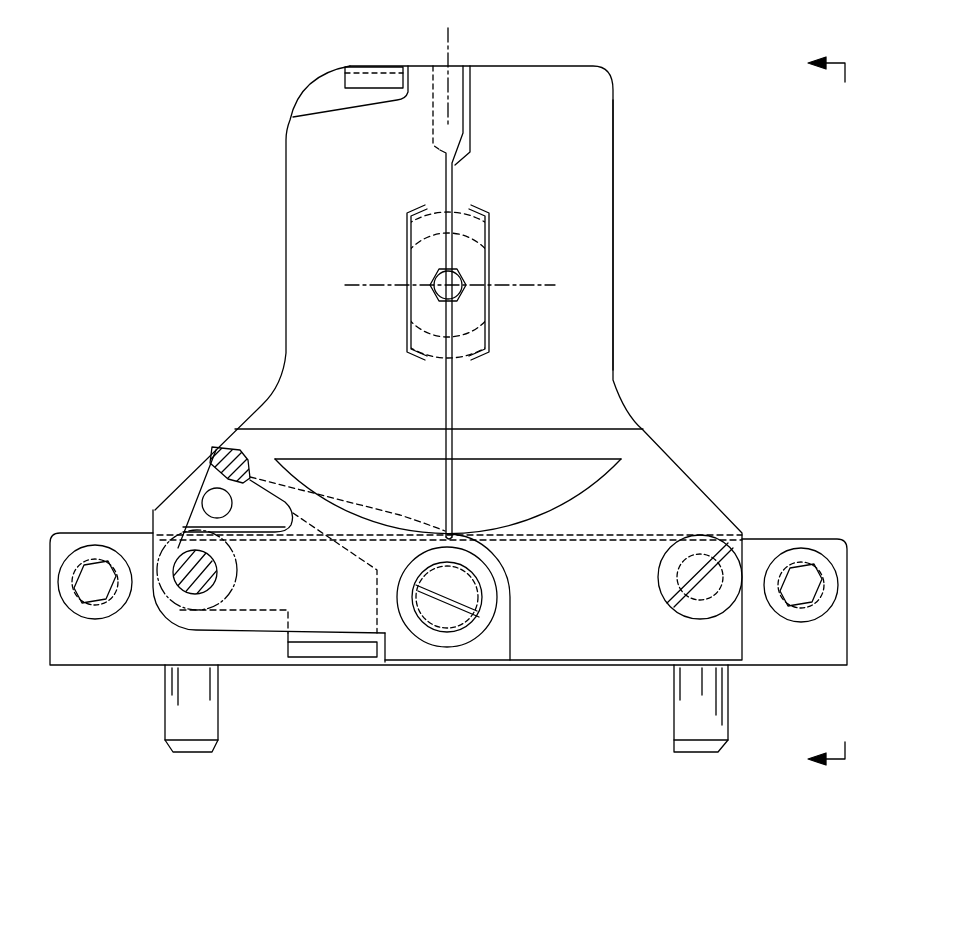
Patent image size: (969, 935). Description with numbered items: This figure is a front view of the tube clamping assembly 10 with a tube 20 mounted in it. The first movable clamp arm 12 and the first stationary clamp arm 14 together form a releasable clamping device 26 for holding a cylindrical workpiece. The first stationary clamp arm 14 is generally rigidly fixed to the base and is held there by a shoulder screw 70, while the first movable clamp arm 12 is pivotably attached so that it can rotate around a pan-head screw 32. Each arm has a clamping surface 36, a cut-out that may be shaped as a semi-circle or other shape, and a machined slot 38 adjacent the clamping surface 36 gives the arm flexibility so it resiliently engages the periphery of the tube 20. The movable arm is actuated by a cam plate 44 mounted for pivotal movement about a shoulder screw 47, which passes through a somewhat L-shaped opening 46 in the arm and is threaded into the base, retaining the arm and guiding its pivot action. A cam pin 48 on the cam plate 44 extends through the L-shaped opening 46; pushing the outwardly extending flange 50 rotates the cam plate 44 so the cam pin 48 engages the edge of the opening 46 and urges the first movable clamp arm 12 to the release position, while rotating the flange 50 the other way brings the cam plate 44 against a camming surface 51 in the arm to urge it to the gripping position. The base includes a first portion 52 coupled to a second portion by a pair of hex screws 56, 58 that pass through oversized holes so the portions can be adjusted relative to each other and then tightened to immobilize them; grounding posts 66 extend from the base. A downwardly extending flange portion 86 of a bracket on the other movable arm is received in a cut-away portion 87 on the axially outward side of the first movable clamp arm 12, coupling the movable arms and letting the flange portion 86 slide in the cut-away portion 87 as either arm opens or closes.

The tube clamping assembly 10 is at (168, 228).
The first movable clamp arm 12 is at (325, 192).
The first stationary clamp arm 14 is at (593, 150).
The tube 20 is at (460, 270).
The releasable clamping device 26 is at (440, 46).
The pan-head screw 32 is at (450, 618).
The clamping surface 36 is at (480, 285).
The slot 38 is at (490, 332).
The cam plate 44 is at (193, 517).
The L-shaped opening 46 is at (258, 517).
The shoulder screw 47 is at (197, 573).
The cam pin 48 is at (217, 488).
The flange 50 is at (342, 650).
The camming surface 51 is at (193, 465).
The first portion 52 is at (97, 643).
The hex screw 56 is at (97, 549).
The hex screw 58 is at (808, 562).
The grounding post 66 is at (212, 714).
The shoulder screw 70 is at (695, 545).
The flange portion 86 is at (377, 72).
The cut-away portion 87 is at (322, 97).